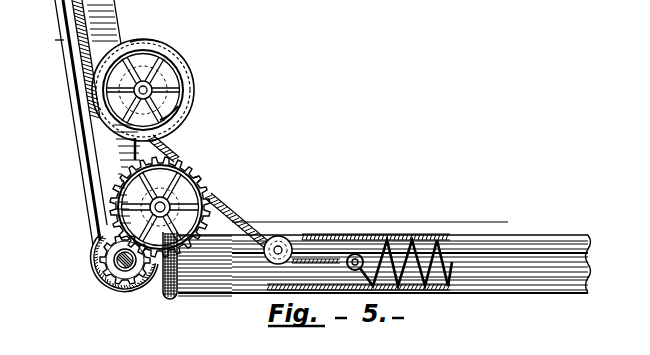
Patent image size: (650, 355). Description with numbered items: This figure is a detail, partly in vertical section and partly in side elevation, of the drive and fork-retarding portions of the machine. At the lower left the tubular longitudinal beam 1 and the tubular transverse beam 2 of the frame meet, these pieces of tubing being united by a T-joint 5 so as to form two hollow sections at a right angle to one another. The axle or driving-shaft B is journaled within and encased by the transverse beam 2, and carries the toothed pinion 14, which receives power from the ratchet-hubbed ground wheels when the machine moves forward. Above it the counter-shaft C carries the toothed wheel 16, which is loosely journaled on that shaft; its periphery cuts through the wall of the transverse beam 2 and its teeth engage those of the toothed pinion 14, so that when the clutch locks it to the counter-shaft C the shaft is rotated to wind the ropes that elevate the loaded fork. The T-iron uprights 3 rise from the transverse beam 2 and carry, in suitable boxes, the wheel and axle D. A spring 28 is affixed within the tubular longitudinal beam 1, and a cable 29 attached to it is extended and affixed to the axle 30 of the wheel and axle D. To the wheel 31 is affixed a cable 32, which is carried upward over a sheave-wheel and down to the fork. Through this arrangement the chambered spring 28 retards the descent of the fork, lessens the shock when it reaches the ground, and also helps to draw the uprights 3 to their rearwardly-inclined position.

The longitudinal beam 1 is at (384, 268).
The transverse beam 2 is at (110, 260).
The uprights 3 is at (97, 122).
The T-joint 5 is at (161, 273).
The toothed pinion 14 is at (99, 285).
The toothed wheel 16 is at (208, 172).
The spring 28 is at (399, 253).
The cable 29 is at (210, 193).
The axle 30 is at (170, 105).
The wheel 31 is at (145, 33).
The cable 32 is at (56, 41).
The axle or driving-shaft B is at (131, 270).
The counter-shaft C is at (177, 203).
The wheel and axle D is at (150, 90).